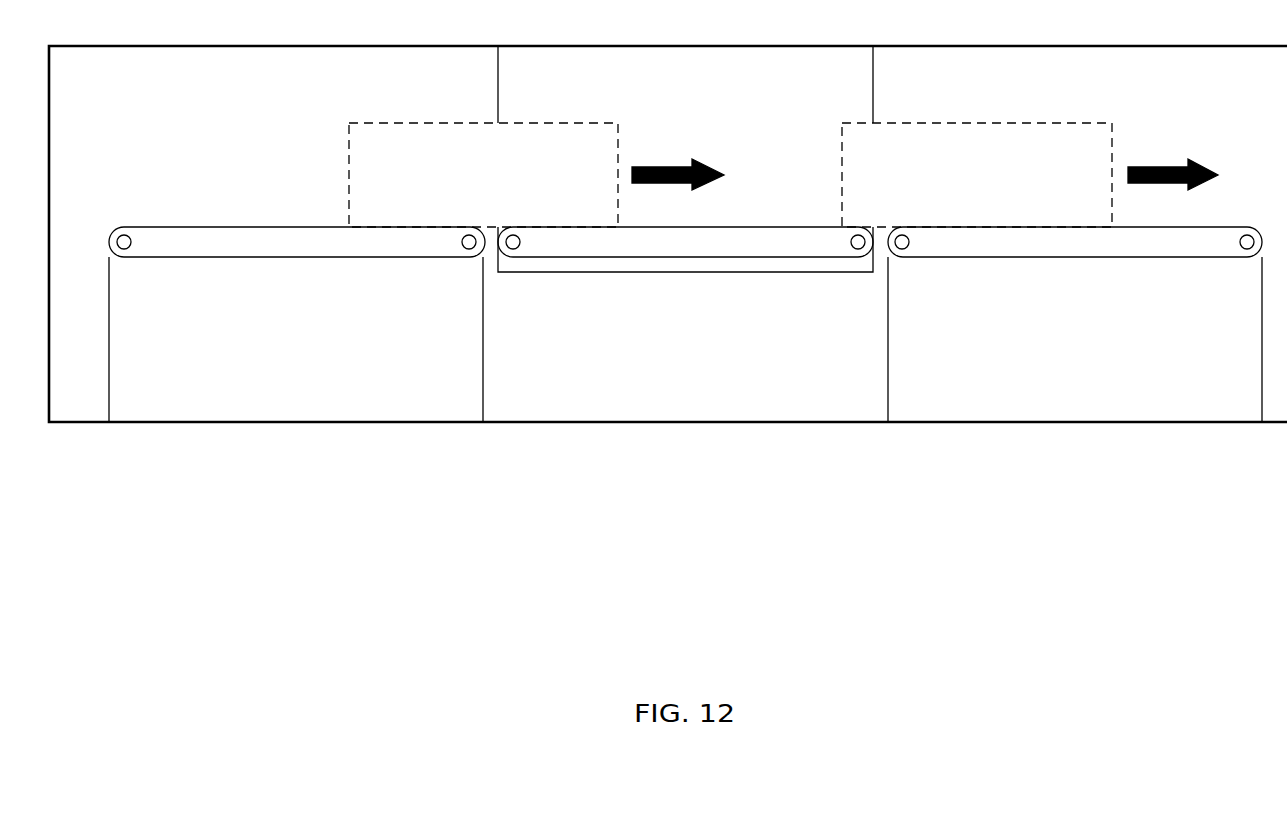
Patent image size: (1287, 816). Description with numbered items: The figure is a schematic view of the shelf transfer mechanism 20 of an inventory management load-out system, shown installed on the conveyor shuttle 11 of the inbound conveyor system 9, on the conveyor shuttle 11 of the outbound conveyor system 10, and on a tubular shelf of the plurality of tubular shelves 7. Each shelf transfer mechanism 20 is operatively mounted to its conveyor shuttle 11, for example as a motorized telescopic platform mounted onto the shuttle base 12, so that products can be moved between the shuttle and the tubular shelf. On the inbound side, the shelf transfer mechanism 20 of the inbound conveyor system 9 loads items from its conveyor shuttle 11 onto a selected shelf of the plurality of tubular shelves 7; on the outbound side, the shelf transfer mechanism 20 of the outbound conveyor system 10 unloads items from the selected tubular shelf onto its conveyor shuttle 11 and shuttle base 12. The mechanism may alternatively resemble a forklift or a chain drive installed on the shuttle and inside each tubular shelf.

The plurality of tubular shelves 7 is at (863, 74).
The inbound conveyor system 9 is at (148, 180).
The outbound conveyor system 10 is at (1263, 192).
The conveyor shuttle 11 is at (685, 339).
The shuttle base 12 is at (473, 334).
The shelf transfer mechanism 20 is at (255, 252).